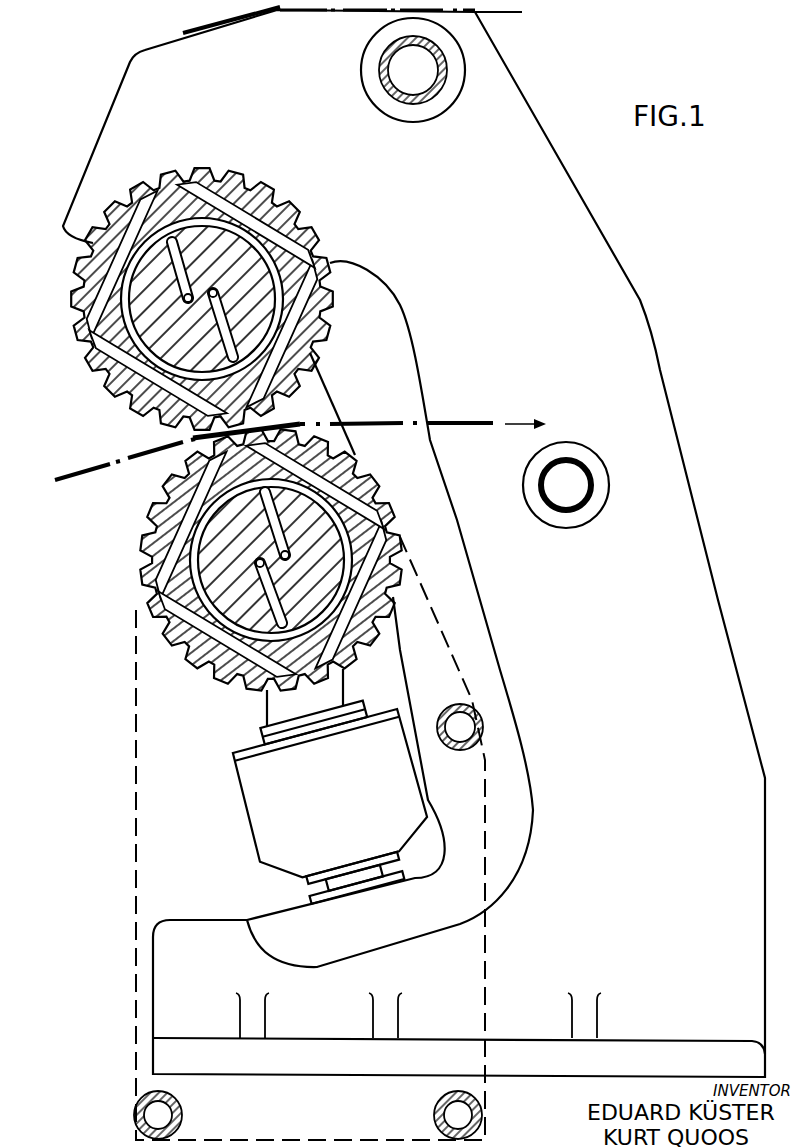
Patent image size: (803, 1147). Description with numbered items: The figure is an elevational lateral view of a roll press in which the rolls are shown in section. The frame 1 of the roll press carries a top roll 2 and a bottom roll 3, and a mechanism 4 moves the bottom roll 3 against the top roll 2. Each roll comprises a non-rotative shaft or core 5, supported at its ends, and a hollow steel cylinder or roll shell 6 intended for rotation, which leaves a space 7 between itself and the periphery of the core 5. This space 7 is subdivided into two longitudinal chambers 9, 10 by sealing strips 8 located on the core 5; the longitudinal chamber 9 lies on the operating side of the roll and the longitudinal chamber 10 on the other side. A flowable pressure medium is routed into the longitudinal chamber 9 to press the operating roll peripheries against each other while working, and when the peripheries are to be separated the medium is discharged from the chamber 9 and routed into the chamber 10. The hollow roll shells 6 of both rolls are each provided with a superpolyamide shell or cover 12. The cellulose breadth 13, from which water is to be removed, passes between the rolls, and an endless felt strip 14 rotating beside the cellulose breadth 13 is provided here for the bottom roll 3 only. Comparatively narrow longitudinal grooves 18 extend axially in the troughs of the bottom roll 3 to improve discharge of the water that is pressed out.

The frame 1 is at (650, 390).
The top roll 2 is at (83, 351).
The bottom roll 3 is at (196, 674).
The mechanism for moving the bottom roll 4 is at (272, 832).
The core 5 is at (197, 243).
The roll shell 6 is at (255, 224).
The space 7 is at (190, 405).
The sealing strips 8 is at (276, 279).
The longitudinal chamber 9 is at (275, 338).
The longitudinal chamber 10 is at (137, 184).
The superpolyamide shell 12 is at (231, 183).
The cellulose breadth 13 is at (478, 423).
The endless felt strip 14 is at (486, 937).
The longitudinal grooves 18 is at (384, 497).